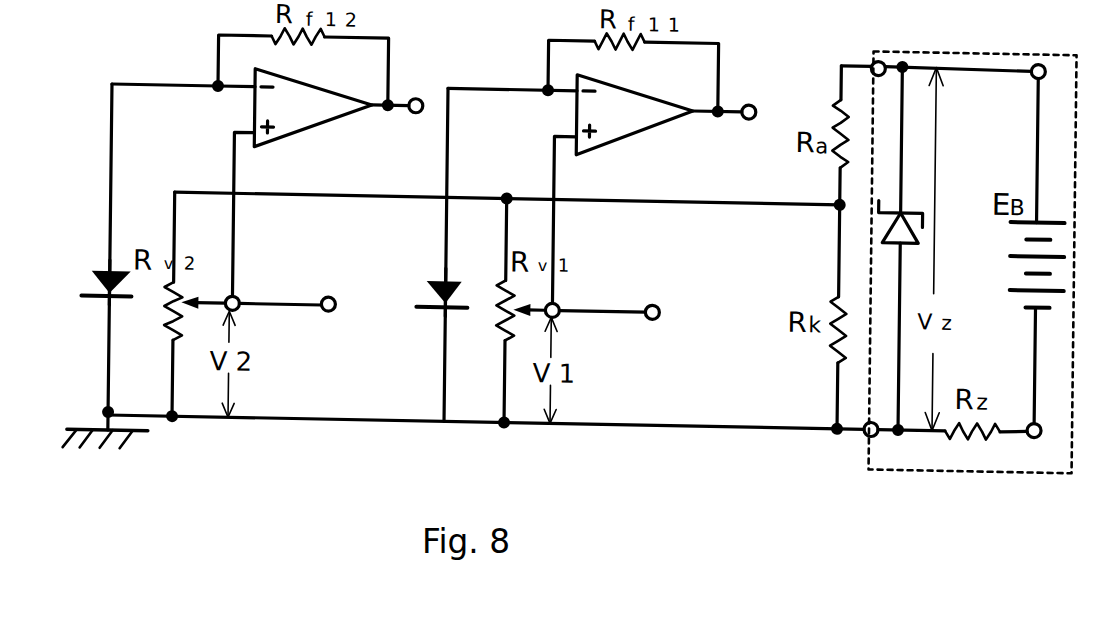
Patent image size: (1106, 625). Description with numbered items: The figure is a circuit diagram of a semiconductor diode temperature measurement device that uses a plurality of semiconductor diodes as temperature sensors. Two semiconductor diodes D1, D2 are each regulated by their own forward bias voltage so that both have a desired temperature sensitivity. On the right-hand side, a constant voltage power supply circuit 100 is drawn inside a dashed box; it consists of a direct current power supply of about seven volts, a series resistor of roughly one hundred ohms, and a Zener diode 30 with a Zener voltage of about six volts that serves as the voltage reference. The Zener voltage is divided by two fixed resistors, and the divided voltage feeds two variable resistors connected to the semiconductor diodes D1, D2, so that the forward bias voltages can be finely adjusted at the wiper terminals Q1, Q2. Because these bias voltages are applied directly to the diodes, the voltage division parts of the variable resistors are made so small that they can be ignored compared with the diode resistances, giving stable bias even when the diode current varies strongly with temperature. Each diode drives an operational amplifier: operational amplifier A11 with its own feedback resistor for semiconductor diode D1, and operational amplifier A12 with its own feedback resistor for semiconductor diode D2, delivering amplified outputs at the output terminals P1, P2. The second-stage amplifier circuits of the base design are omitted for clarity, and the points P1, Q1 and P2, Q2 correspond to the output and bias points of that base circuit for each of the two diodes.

The Zener diode 30 is at (915, 188).
The constant voltage power supply circuit 100 is at (872, 440).
The operational amplifier A11 is at (634, 116).
The operational amplifier A12 is at (313, 109).
The semiconductor diode D1 is at (430, 280).
The semiconductor diode D2 is at (84, 274).
The output terminal P1 is at (765, 94).
The output terminal P2 is at (427, 88).
The bias voltage terminal Q1 is at (610, 292).
The bias voltage terminal Q2 is at (285, 284).